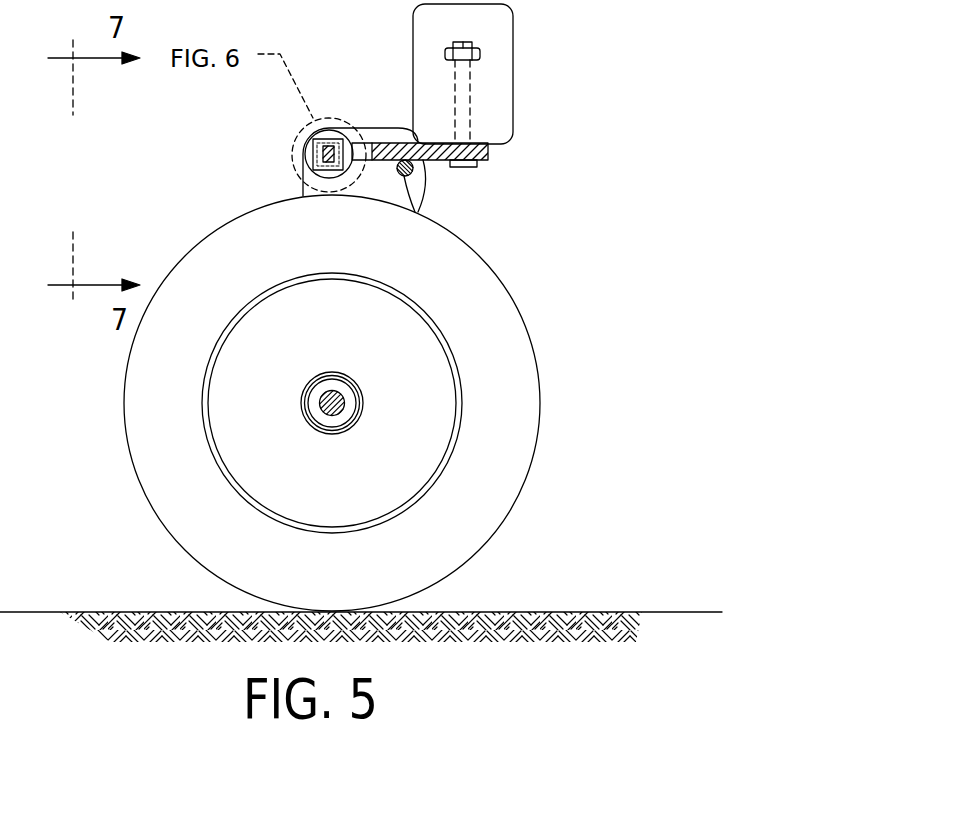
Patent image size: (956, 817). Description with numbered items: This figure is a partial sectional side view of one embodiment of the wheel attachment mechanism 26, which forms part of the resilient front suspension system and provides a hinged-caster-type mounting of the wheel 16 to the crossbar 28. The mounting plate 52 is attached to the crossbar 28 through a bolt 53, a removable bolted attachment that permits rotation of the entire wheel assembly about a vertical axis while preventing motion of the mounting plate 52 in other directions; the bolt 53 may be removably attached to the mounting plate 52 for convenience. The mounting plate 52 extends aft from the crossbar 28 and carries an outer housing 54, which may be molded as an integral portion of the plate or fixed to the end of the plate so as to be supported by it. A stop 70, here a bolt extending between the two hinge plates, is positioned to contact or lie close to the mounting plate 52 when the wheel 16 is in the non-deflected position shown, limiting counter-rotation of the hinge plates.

The wheel 16 is at (510, 415).
The wheel attachment mechanism 26 is at (632, 71).
The crossbar 28 is at (500, 40).
The mounting plate 52 is at (440, 162).
The bolt 53 is at (471, 92).
The outer housing 54 is at (331, 128).
The stop 70 is at (418, 212).